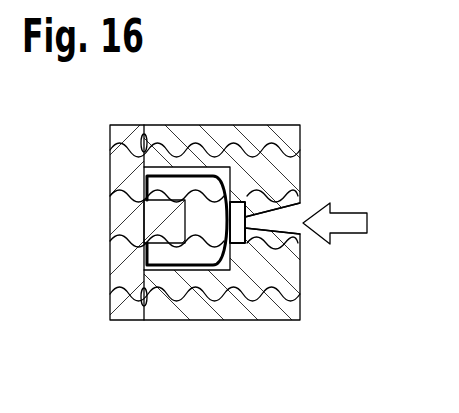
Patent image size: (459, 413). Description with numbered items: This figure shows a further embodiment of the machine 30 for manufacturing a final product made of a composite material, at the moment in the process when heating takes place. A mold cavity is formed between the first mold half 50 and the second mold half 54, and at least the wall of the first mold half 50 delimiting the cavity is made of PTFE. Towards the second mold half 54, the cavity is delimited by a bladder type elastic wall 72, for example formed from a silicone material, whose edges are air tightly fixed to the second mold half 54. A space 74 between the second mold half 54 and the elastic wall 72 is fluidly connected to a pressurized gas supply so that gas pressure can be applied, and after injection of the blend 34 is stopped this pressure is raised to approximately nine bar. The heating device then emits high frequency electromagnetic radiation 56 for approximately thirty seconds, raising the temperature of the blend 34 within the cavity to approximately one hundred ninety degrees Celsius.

The machine 30 is at (311, 125).
The first mold half 50 is at (247, 135).
The high frequency electromagnetic radiation 56 is at (200, 129).
The second mold half 54 is at (128, 147).
The space 74 is at (192, 232).
The elastic wall 72 is at (142, 297).
The blend 34 is at (232, 188).